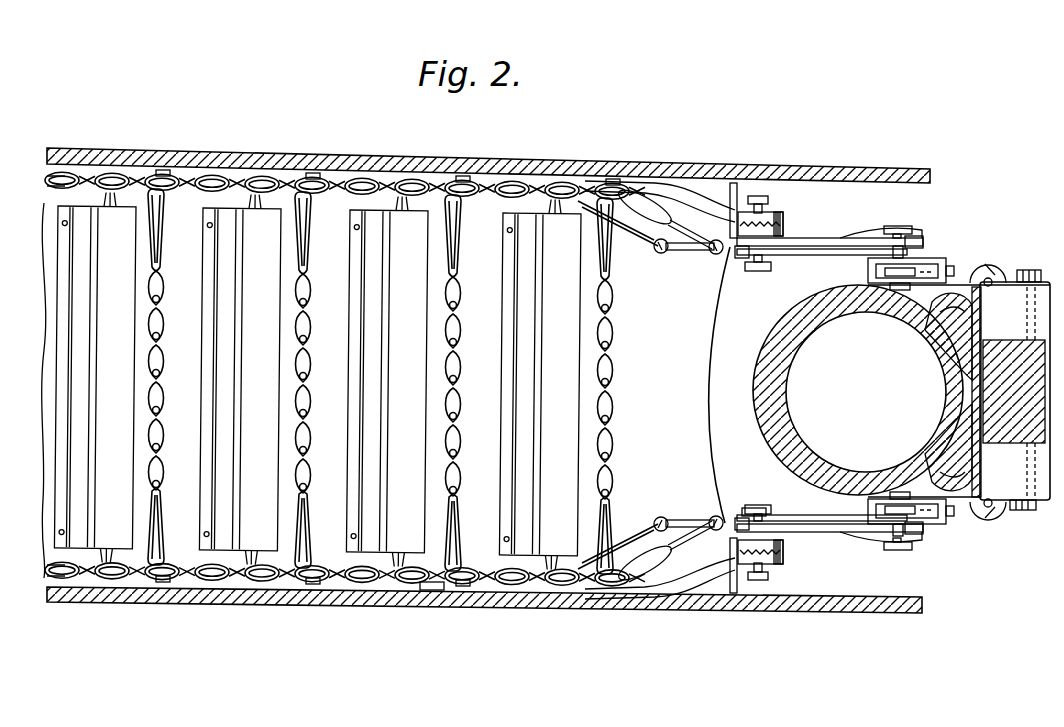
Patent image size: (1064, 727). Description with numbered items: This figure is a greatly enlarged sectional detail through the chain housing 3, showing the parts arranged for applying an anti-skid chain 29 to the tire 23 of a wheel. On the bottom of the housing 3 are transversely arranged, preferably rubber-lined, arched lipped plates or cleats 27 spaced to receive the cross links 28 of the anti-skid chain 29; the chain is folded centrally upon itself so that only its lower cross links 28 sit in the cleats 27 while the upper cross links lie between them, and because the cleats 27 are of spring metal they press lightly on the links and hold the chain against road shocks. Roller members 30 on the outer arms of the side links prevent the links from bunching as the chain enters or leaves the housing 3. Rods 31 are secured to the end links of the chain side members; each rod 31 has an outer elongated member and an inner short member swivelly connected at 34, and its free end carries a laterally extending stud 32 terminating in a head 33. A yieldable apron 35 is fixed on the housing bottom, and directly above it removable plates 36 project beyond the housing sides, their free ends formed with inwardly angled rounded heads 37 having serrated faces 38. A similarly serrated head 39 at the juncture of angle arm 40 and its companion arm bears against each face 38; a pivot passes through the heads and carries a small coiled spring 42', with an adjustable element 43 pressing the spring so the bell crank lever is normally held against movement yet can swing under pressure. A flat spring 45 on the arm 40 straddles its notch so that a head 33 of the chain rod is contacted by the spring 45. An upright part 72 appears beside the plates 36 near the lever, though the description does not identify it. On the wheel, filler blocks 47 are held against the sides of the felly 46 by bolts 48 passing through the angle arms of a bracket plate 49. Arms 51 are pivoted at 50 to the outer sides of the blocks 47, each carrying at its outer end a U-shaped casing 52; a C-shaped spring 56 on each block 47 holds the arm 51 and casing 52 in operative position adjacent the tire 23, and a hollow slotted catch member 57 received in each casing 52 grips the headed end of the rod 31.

The housing 3 is at (273, 150).
The tire 23 is at (858, 390).
The arched lipped plates or cleats 27 is at (75, 305).
The cross links 28 is at (75, 197).
The anti-skid chain 29 is at (432, 592).
The roller members 30 is at (157, 170).
The rods 31 is at (697, 248).
The studs 32 is at (925, 238).
The heads 33 is at (757, 272).
The swivel connection 34 is at (658, 254).
The apron 35 is at (710, 330).
The plates 36 is at (650, 180).
The rounded heads 37 is at (782, 220).
The serrated face 38 is at (778, 228).
The serrated head 39 is at (738, 255).
The angle arm 40 is at (860, 238).
The coiled spring 42' is at (750, 377).
The adjustable element 43 is at (780, 212).
The flat spring 45 is at (880, 232).
The felly 46 is at (975, 393).
The filler blocks 47 is at (1000, 320).
The bolts 48 is at (1030, 268).
The bracket plate 49 is at (1045, 465).
The pivot 50 is at (990, 510).
The arms 51 is at (975, 262).
The casing or housing 52 is at (866, 508).
The C-shaped spring 56 is at (1014, 510).
The catch member 57 is at (960, 265).
The bracket 72 is at (735, 192).